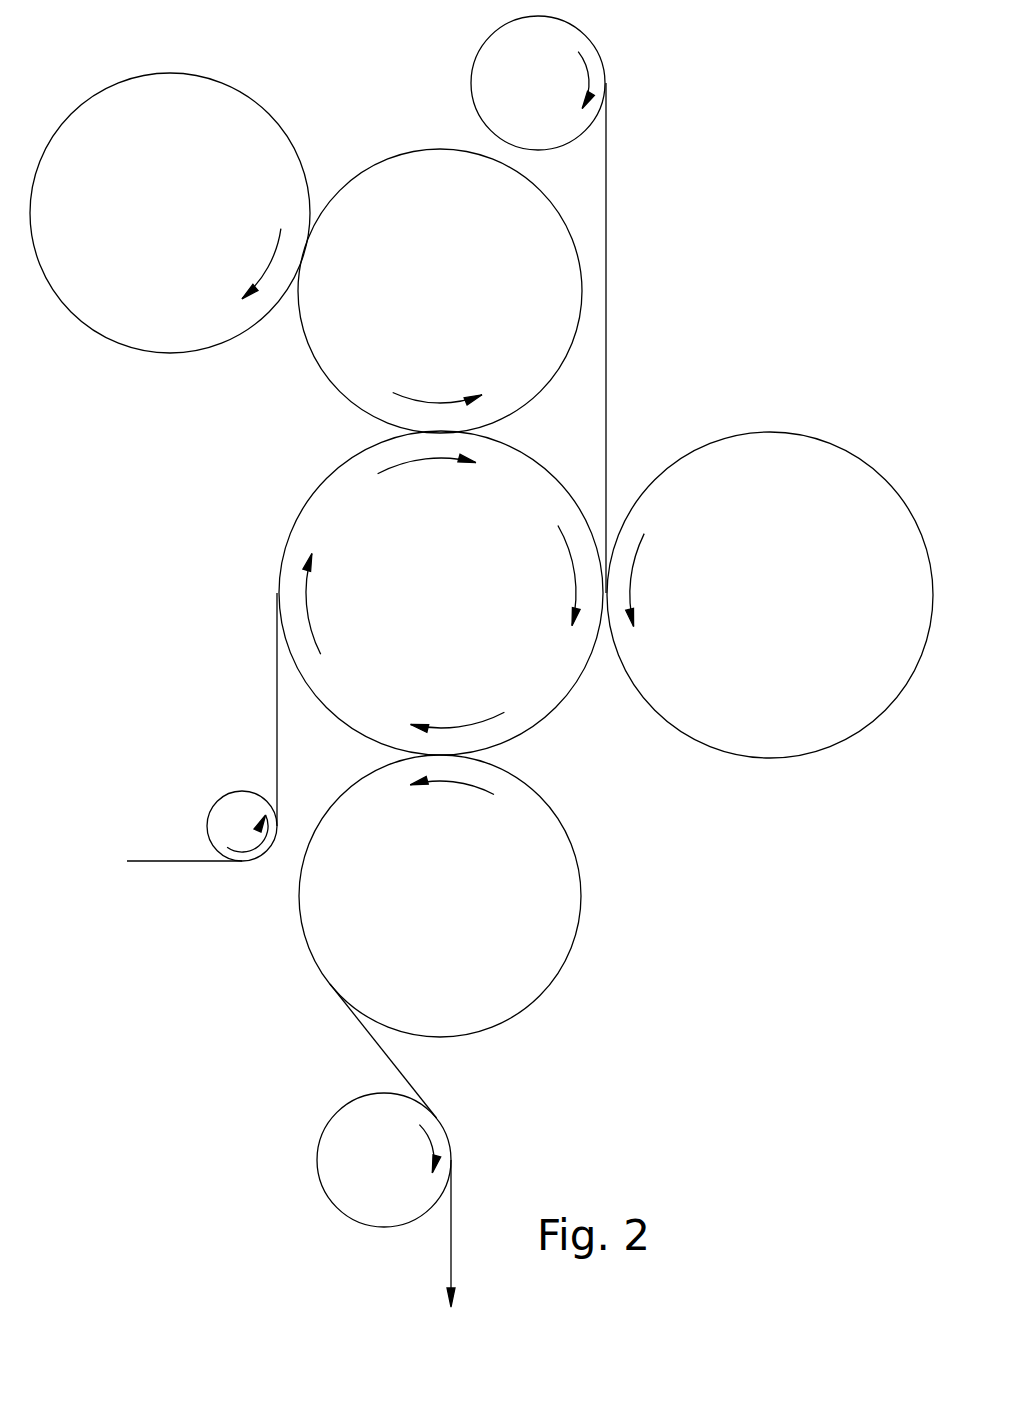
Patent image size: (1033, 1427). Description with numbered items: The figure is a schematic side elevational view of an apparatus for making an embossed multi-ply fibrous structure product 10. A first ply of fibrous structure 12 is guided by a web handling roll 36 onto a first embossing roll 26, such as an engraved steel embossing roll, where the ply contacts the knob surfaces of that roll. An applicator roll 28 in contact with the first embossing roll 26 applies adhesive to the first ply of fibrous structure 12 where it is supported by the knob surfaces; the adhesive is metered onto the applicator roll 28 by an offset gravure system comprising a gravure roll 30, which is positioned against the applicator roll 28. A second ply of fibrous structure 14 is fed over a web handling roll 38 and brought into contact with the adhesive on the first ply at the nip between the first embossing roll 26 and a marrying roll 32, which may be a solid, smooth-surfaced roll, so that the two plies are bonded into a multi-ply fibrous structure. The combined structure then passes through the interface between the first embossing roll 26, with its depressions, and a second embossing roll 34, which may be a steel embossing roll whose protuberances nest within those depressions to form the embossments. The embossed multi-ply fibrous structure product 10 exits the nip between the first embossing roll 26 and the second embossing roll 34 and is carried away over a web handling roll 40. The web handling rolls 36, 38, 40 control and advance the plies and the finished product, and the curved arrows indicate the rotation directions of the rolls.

The embossed multi-ply fibrous structure product 10 is at (378, 1048).
The first ply of fibrous structure 12 is at (187, 862).
The second ply of fibrous structure 14 is at (606, 230).
The first embossing roll 26 is at (458, 617).
The applicator roll 28 is at (458, 315).
The gravure roll 30 is at (188, 238).
The marrying roll 32 is at (788, 620).
The second embossing roll 34 is at (458, 920).
The web handling roll 36 is at (219, 833).
The web handling roll 38 is at (554, 108).
The web handling roll 40 is at (400, 1185).